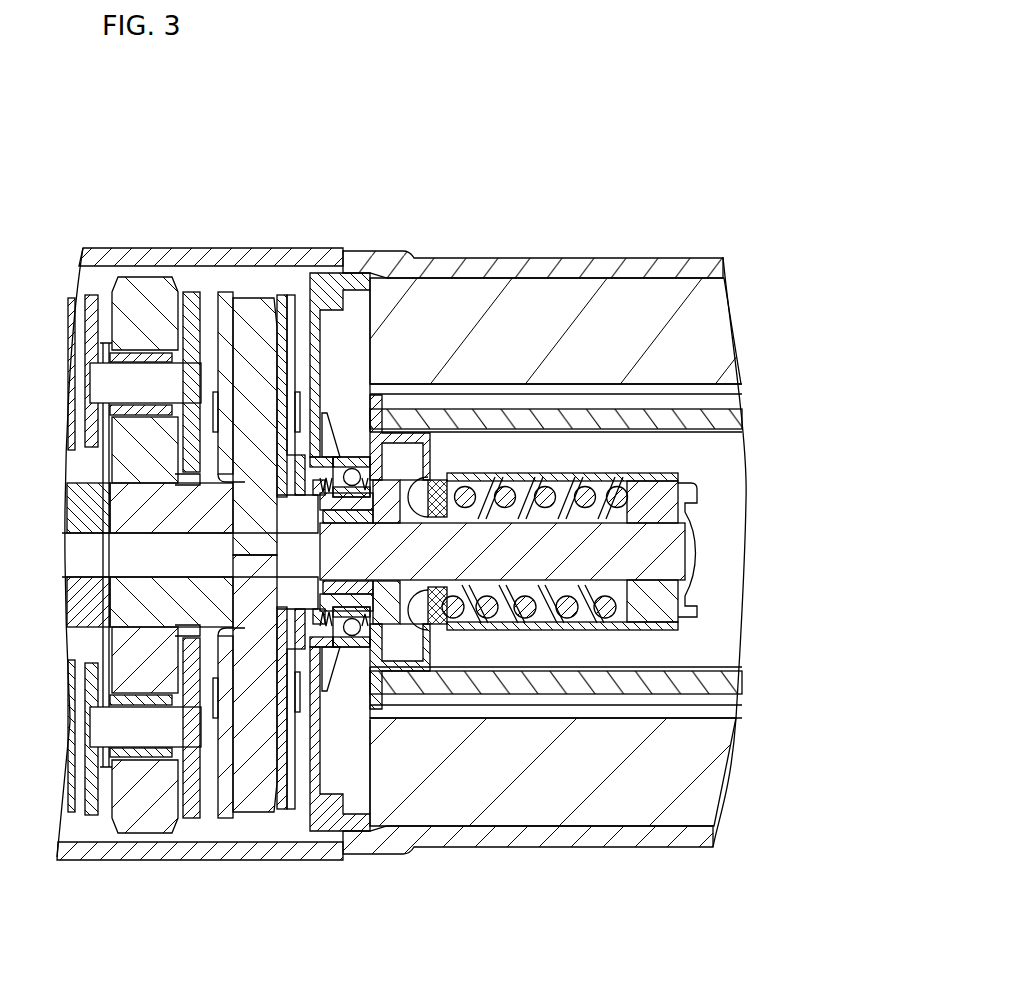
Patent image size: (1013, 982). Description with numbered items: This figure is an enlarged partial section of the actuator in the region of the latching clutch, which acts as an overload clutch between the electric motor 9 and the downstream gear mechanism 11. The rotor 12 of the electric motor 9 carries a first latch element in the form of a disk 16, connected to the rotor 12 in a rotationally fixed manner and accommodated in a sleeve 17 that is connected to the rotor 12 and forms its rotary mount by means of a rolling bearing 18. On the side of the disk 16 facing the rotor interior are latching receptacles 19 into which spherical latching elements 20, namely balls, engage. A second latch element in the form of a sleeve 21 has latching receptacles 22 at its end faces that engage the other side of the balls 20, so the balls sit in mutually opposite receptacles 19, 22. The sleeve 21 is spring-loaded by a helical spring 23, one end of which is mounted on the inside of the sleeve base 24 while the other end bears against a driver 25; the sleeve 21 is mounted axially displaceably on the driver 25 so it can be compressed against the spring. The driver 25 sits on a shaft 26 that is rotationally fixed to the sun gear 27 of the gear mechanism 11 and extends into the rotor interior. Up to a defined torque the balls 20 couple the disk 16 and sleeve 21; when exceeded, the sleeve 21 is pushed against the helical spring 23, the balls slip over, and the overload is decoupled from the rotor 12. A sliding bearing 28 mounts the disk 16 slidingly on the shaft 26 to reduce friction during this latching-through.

The electric motor 9 is at (735, 218).
The gear mechanism 11 is at (205, 211).
The rotor 12 is at (738, 420).
The first latch element 16 is at (445, 473).
The sleeve 17 is at (407, 440).
The rolling bearing 18 is at (336, 457).
The latching receptacles 19 is at (340, 648).
The latching elements 20 is at (409, 632).
The second latch element 21 is at (560, 455).
The latching receptacles 22 is at (476, 473).
The helical spring 23 is at (612, 462).
The sleeve base 24 is at (440, 625).
The driver 25 is at (667, 610).
The shaft 26 is at (640, 556).
The sun gear 27 is at (257, 497).
The sliding bearing 28 is at (255, 860).